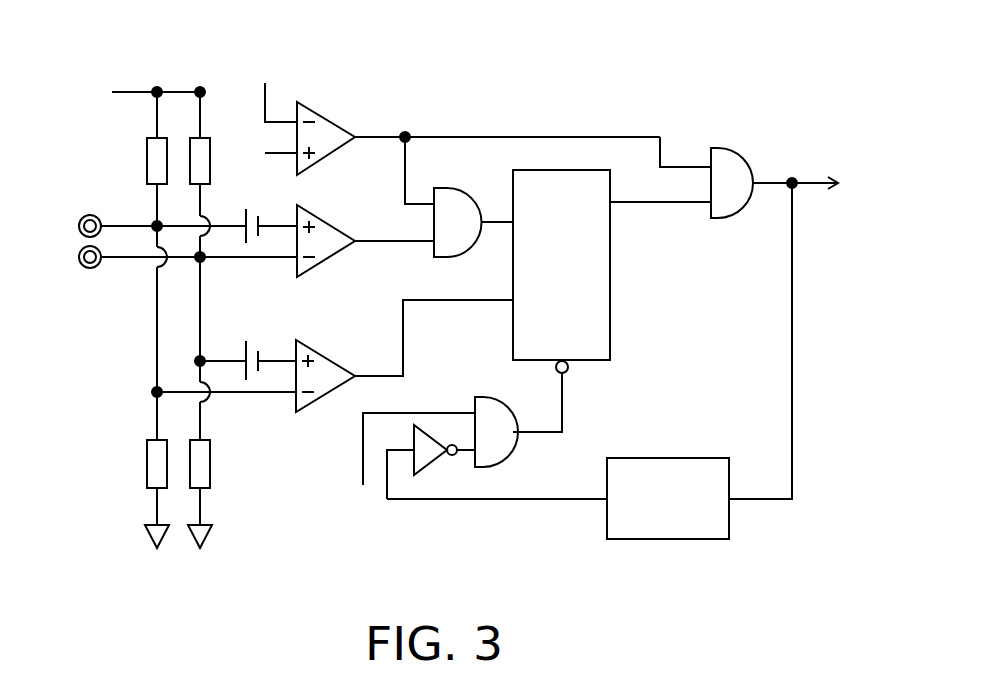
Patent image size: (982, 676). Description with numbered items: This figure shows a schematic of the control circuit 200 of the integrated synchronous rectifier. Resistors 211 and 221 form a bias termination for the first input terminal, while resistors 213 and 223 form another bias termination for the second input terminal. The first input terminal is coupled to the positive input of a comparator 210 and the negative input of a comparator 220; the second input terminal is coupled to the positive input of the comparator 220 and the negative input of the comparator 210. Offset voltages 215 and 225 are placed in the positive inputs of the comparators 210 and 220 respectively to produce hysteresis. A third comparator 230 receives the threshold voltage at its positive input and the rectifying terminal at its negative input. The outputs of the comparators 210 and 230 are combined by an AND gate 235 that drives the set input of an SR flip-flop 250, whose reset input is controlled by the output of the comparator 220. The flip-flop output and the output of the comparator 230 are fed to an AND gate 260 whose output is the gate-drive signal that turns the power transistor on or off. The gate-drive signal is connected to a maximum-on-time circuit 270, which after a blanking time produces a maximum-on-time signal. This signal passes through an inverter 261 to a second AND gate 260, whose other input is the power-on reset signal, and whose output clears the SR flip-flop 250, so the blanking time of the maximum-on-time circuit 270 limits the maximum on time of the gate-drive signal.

The control circuit 200 is at (859, 96).
The comparator 210 is at (327, 238).
The resistor 211 is at (136, 161).
The resistor 213 is at (221, 149).
The offset voltage 215 is at (256, 208).
The comparator 220 is at (326, 372).
The resistor 221 is at (135, 464).
The resistor 223 is at (221, 464).
The offset voltage 225 is at (255, 344).
The third comparator 230 is at (328, 132).
The AND gate 235 is at (447, 186).
The SR flip-flop 250 is at (592, 284).
The AND gate 260 is at (730, 165).
The inverter 261 is at (428, 462).
The maximum-on-time circuit 270 is at (668, 470).